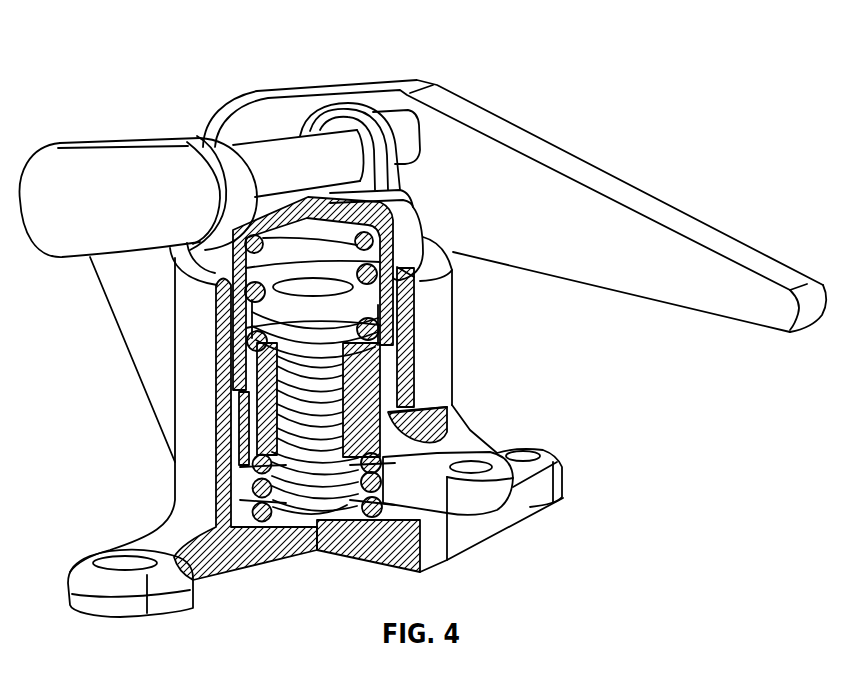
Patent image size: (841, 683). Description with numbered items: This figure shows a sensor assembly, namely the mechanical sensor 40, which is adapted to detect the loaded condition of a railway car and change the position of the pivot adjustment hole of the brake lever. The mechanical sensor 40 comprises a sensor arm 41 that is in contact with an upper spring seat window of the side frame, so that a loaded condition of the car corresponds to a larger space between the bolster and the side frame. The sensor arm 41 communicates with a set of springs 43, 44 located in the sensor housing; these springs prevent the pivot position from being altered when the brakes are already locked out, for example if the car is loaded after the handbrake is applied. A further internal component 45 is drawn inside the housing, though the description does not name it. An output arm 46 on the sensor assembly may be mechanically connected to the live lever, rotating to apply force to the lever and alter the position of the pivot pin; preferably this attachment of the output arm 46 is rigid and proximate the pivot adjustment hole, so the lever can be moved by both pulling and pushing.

The mechanical sensor 40 is at (113, 48).
The sensor arm 41 is at (549, 212).
The spring 43 is at (452, 362).
The spring 44 is at (367, 513).
The screw 45 is at (310, 288).
The output arm 46 is at (463, 440).